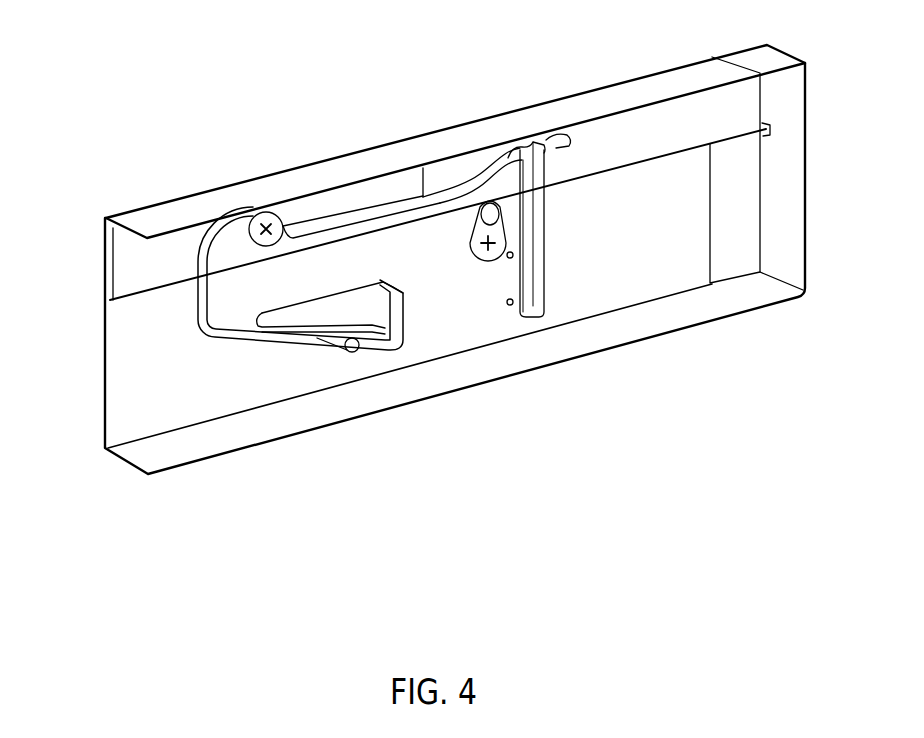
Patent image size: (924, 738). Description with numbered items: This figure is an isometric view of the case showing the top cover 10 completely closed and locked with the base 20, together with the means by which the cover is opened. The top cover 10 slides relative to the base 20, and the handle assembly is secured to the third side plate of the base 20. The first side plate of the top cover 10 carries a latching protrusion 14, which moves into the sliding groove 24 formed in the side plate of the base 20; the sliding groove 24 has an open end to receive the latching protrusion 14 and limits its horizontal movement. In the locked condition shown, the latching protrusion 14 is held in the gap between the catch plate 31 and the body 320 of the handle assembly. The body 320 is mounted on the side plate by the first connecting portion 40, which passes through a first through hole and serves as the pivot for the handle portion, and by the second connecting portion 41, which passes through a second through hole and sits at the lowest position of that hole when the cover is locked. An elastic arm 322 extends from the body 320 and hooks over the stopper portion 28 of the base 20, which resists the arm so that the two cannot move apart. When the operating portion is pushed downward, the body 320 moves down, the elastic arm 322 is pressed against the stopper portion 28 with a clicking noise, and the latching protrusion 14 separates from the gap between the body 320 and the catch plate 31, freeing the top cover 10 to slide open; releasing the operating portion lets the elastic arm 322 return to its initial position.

The top cover 10 is at (456, 130).
The latching protrusion 14 is at (521, 163).
The base 20 is at (194, 378).
The sliding groove 24 is at (447, 173).
The stopper portion 28 is at (346, 352).
The catch plate 31 is at (547, 187).
The first connecting portion 40 is at (250, 226).
The second connecting portion 41 is at (490, 245).
The body 320 is at (380, 238).
The elastic arm 322 is at (294, 342).